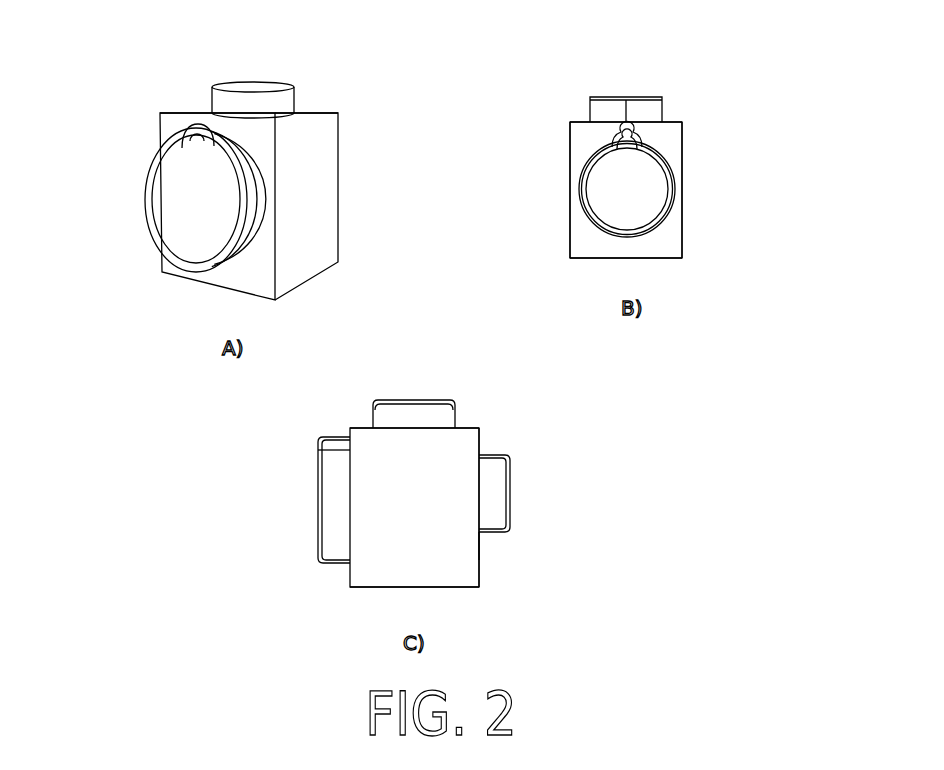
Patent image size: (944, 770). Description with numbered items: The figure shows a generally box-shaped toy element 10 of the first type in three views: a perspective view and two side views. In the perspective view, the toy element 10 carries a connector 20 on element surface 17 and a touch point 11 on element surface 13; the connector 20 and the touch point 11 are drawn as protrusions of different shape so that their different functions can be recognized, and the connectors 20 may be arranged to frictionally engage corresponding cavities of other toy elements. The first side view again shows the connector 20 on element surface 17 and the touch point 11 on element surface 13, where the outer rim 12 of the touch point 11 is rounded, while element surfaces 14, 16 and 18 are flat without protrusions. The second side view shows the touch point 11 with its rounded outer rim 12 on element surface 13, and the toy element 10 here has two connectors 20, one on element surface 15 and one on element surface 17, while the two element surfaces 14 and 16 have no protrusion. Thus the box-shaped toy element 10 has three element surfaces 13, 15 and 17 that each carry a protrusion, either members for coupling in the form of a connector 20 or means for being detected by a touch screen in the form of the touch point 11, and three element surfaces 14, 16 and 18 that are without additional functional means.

The toy element 10 is at (138, 82).
The touch point 11 is at (173, 183).
The outer rim 12 is at (673, 185).
The element surface 13 is at (242, 280).
The element surface 14 is at (682, 222).
The element surface 15 is at (480, 538).
The element surface 16 is at (650, 258).
The element surface 17 is at (302, 113).
The element surface 18 is at (572, 178).
The connector 20 is at (267, 85).